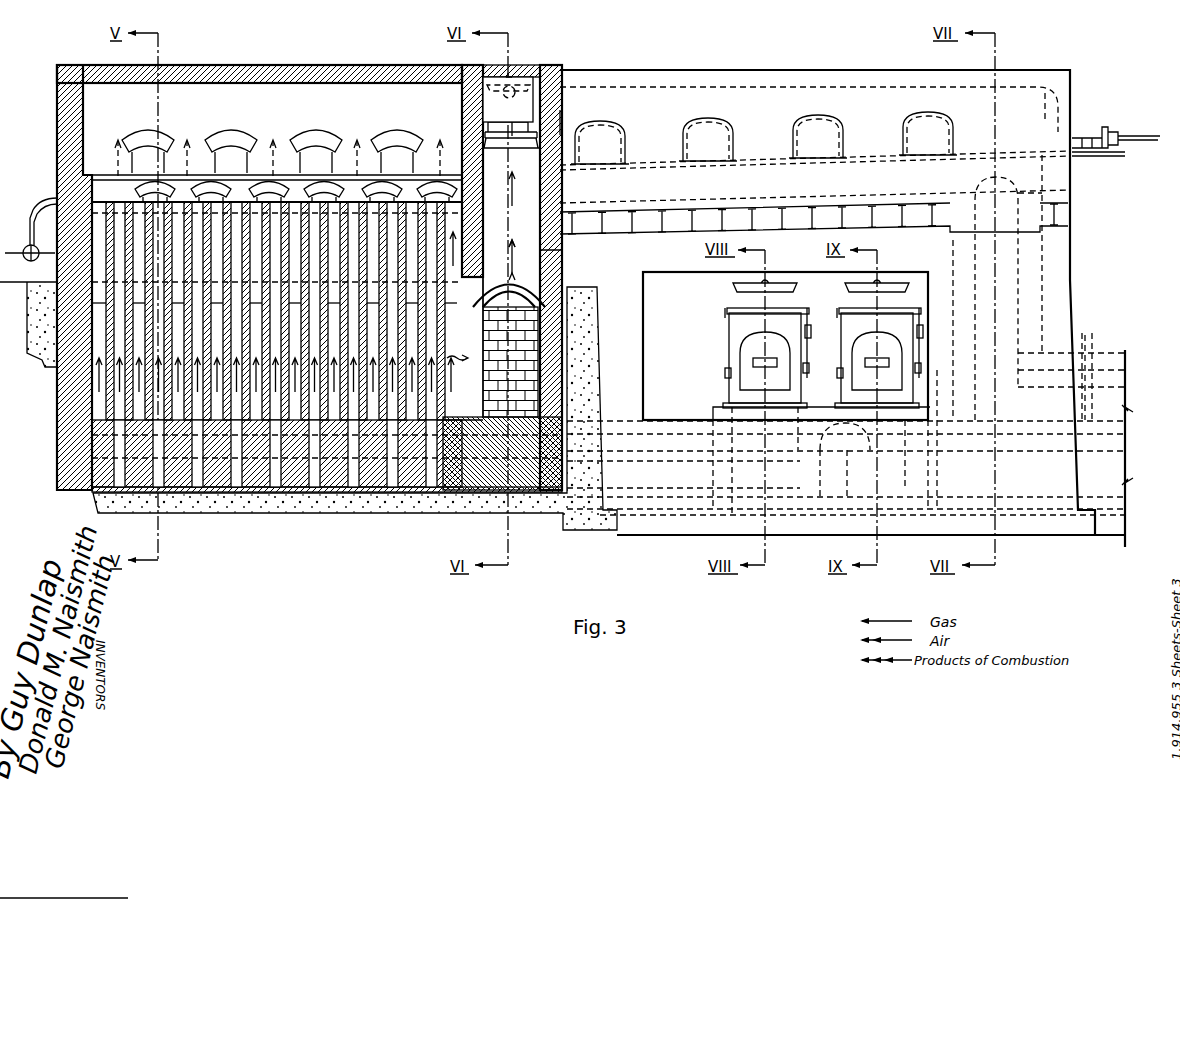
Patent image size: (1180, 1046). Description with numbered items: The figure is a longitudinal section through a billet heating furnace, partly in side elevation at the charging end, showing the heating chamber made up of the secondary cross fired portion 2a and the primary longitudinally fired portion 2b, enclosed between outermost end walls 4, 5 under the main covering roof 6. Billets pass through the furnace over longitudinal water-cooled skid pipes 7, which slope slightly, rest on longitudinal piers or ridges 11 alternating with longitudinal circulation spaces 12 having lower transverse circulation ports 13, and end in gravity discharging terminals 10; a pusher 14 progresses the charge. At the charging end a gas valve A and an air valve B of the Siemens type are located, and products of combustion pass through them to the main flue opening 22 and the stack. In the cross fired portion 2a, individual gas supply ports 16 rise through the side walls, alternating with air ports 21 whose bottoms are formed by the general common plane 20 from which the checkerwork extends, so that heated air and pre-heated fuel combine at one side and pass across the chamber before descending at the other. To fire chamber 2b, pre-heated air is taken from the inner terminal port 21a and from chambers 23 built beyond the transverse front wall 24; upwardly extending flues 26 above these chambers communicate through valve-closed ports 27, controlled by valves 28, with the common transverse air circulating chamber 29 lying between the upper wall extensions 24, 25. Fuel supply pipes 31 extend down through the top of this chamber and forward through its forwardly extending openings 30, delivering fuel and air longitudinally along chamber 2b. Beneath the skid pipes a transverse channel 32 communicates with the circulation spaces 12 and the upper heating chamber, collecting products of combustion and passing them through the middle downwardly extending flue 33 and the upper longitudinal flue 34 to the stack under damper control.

The outermost end wall 4 is at (57, 100).
The main covering roof 6 is at (284, 65).
The longitudinal water-cooled skid pipes 7 is at (320, 172).
The longitudinal individual piers or ridges 11 is at (240, 190).
The lower transverse circulation ports 13 is at (150, 196).
The secondary cross fired portion 2a is at (277, 134).
The primary longitudinally fired portion 2b is at (815, 175).
The upper wall extension 25 is at (470, 111).
The common transverse air circulating chamber 29 is at (508, 99).
The valves 28 is at (527, 88).
The fuel supply pipes 31 is at (562, 67).
The forwardly extending openings 30 is at (565, 107).
The valve-closed ports 27 is at (562, 125).
The longitudinal circulation spaces 12 is at (815, 177).
The pusher 14 is at (1110, 130).
The outermost end wall 5 is at (1076, 171).
The transverse channel 32 is at (997, 298).
The middle downwardly extending flue 33 is at (1016, 282).
The front wall 24 is at (563, 264).
The upwardly extending flues 26 is at (511, 204).
The general common plane 20 is at (653, 418).
The air valve B is at (758, 348).
The gas valve A is at (890, 366).
The main flue opening 22 is at (846, 442).
The upper longitudinal flue 34 is at (1107, 409).
The gravity discharging terminals 10 is at (46, 196).
The individual gas supply ports 16 is at (232, 470).
The alternating ports 21 is at (283, 432).
The inner terminal port 21a is at (455, 422).
The chambers 23 is at (522, 400).